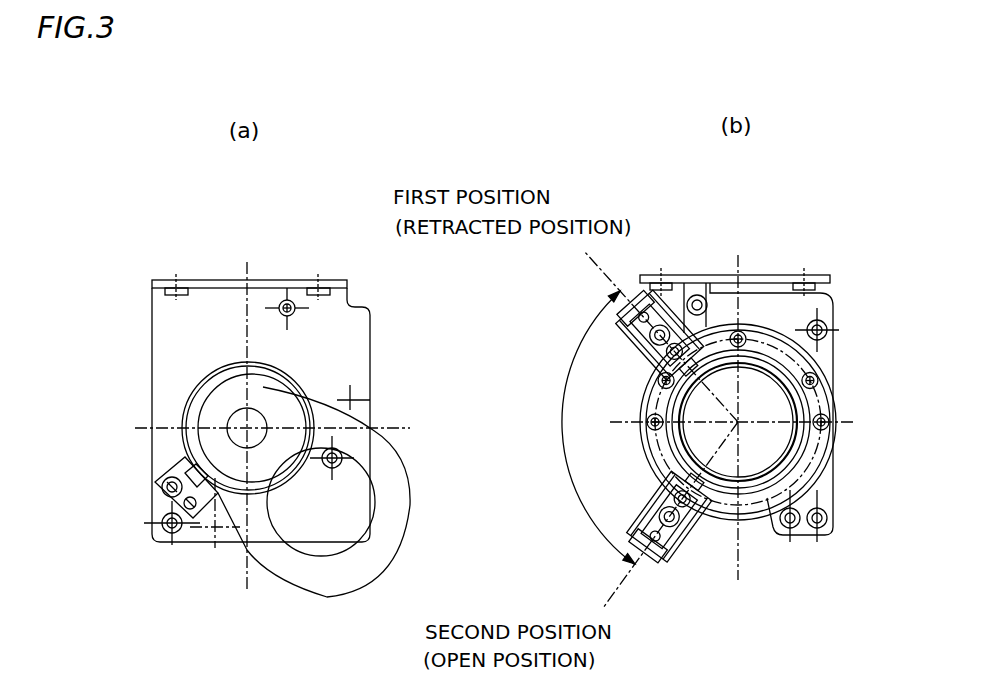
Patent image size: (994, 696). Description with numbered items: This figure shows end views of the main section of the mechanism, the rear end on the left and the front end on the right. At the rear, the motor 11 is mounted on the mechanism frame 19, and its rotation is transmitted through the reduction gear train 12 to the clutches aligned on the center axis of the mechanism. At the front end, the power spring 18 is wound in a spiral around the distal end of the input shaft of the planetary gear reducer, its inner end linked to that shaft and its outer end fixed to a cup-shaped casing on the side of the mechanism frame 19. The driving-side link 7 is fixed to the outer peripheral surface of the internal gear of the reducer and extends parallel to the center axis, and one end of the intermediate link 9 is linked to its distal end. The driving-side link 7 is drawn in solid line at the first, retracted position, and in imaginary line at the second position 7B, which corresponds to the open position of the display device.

The mechanism frame 19 is at (205, 278).
The reduction gear train 12 is at (258, 532).
The motor 11 is at (333, 525).
The intermediate link 9 is at (585, 345).
The driving-side link 7 is at (630, 362).
The second position 7B is at (706, 540).
The power spring 18 is at (767, 458).